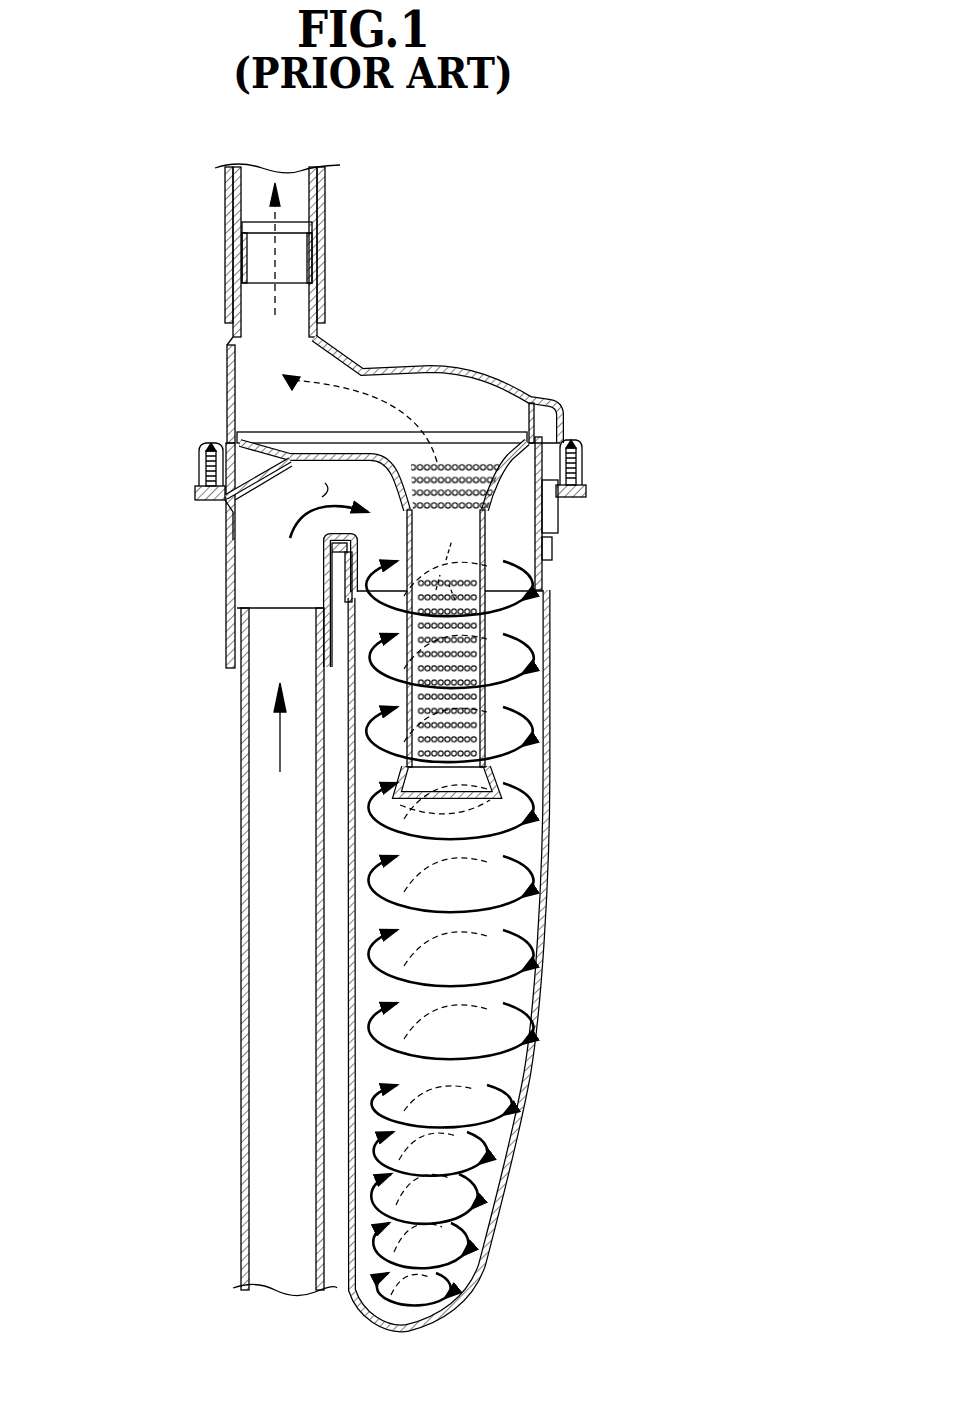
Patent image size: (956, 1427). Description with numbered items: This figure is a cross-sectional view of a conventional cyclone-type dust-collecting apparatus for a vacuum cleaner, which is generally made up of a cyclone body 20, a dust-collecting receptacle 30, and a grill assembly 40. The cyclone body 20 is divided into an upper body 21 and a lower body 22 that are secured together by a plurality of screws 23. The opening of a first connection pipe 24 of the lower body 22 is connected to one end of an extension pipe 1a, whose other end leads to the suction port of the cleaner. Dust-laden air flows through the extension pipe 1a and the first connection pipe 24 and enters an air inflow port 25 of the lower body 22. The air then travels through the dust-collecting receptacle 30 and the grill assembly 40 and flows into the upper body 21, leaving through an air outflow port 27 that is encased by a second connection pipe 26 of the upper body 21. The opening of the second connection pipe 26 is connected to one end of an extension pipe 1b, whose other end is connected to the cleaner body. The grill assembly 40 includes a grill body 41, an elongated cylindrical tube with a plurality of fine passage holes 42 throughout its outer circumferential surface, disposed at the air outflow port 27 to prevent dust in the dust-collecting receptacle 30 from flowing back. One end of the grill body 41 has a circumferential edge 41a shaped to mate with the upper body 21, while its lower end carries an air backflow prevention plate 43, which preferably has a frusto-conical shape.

The extension pipe 1a is at (247, 1148).
The extension pipe 1b is at (226, 186).
The cyclone body 20 is at (100, 363).
The upper body 21 is at (229, 388).
The lower body 22 is at (236, 514).
The screws 23 is at (560, 503).
The first connection pipe 24 is at (233, 588).
The air inflow port 25 is at (229, 549).
The second connection pipe 26 is at (229, 335).
The air outflow port 27 is at (405, 390).
The dust-collecting receptacle 30 is at (343, 890).
The grill assembly 40 is at (385, 693).
The grill body 41 is at (546, 550).
The circumferential edge 41a is at (512, 437).
The fine passage holes 42 is at (480, 717).
The air backflow prevention plate 43 is at (500, 778).